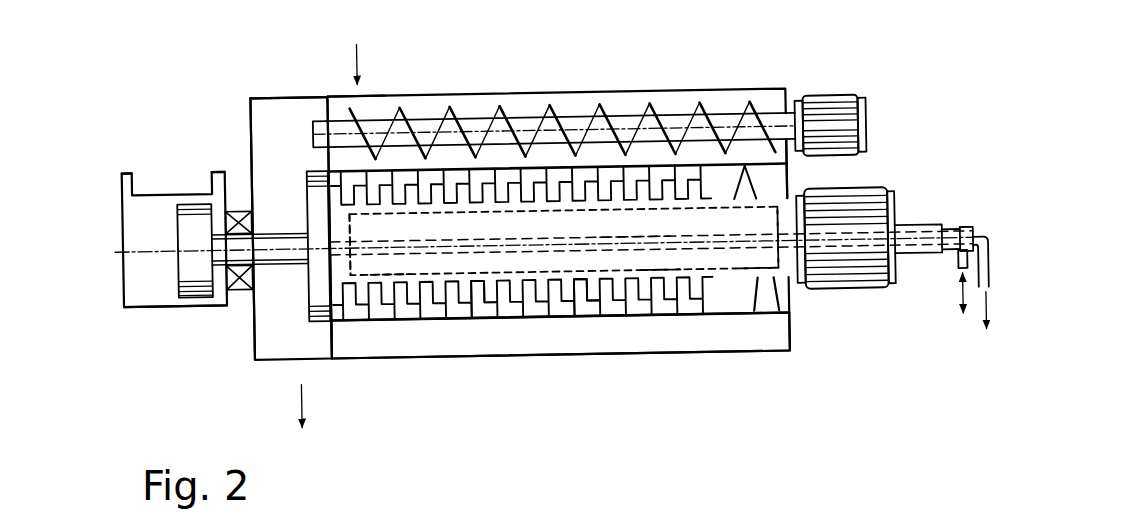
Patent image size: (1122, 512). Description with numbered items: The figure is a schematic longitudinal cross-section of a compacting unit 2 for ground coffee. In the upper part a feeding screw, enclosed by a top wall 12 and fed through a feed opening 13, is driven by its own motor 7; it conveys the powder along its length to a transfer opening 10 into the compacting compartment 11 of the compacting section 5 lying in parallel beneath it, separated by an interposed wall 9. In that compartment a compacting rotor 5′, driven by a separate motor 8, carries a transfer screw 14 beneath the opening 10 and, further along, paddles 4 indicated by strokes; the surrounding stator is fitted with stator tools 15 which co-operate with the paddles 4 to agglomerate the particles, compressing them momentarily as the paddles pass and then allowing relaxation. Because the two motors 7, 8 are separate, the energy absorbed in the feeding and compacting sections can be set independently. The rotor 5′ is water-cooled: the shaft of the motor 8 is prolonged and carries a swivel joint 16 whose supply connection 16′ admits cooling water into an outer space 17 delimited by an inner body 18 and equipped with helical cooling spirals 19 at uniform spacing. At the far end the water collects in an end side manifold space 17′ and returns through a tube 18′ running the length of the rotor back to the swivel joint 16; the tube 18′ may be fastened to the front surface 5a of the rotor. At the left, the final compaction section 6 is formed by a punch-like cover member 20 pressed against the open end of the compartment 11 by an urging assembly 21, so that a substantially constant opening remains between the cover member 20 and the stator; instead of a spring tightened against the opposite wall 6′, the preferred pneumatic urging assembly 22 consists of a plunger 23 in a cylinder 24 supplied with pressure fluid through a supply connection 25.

The compacting unit 2 is at (730, 108).
The paddles 4 is at (610, 301).
The compacting section 5 is at (513, 321).
The front surface of the rotor 5a is at (340, 214).
The compacting rotor 5′ is at (770, 285).
The final compaction section 6 is at (284, 66).
The opposite wall 6′ is at (254, 133).
The motor 7 is at (848, 103).
The motor 8 is at (879, 215).
The interposed wall 9 is at (686, 168).
The transfer opening 10 is at (770, 177).
The compacting compartment 11 is at (742, 302).
The wall 12 is at (564, 92).
The feed opening 13 is at (391, 91).
The transfer screw 14 is at (712, 301).
The stator tools 15 is at (486, 324).
The swivel joint 16 is at (959, 215).
The supply connection 16′ is at (956, 270).
The outer space 17 is at (783, 265).
The end side manifold space 17′ is at (341, 262).
The inner body 18 is at (389, 268).
The tube 18′ is at (633, 237).
The cooling spirals 19 is at (573, 292).
The cover member 20 is at (306, 179).
The urging assembly 21 is at (165, 123).
The pneumatic urging assembly 22 is at (169, 322).
The plunger 23 is at (186, 262).
The cylinder 24 is at (203, 301).
The supply connection 25 is at (213, 176).